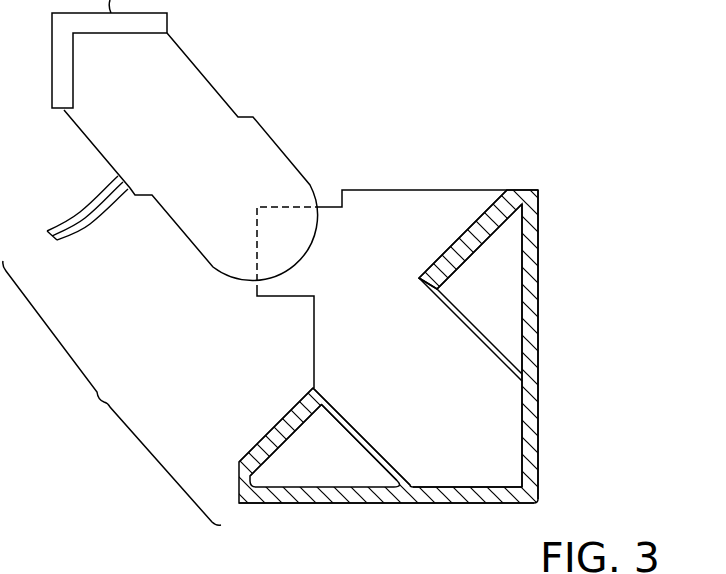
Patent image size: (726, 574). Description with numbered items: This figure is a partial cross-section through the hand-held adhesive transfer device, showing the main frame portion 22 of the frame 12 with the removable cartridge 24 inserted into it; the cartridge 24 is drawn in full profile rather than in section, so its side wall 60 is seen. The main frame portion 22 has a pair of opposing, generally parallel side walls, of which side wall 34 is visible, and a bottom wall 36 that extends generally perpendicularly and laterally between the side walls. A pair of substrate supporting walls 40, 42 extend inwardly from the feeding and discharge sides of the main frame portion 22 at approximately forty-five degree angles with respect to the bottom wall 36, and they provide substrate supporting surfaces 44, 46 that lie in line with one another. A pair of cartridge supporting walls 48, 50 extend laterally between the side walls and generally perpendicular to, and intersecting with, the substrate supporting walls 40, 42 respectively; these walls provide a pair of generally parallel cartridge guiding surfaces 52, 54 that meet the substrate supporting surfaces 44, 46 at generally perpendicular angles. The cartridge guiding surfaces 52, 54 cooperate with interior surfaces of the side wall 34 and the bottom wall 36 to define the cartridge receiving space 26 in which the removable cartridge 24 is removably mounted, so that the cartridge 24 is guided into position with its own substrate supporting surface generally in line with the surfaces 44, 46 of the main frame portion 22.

The frame 12 is at (112, 393).
The main frame portion 22 is at (538, 457).
The removable cartridge 24 is at (180, 67).
The cartridge receiving space 26 is at (473, 407).
The side wall 34 is at (388, 337).
The bottom wall 36 is at (433, 498).
The substrate supporting wall 40 is at (498, 238).
The substrate supporting wall 42 is at (273, 458).
The substrate supporting surface 44 is at (443, 258).
The substrate supporting surface 46 is at (270, 455).
The cartridge supporting wall 48 is at (473, 315).
The cartridge supporting wall 50 is at (358, 452).
The cartridge guiding surface 52 is at (470, 344).
The cartridge guiding surface 54 is at (343, 417).
The side wall 60 is at (188, 151).